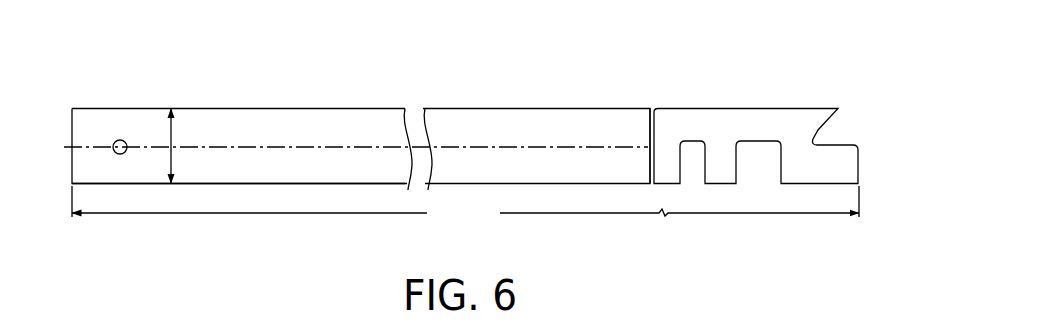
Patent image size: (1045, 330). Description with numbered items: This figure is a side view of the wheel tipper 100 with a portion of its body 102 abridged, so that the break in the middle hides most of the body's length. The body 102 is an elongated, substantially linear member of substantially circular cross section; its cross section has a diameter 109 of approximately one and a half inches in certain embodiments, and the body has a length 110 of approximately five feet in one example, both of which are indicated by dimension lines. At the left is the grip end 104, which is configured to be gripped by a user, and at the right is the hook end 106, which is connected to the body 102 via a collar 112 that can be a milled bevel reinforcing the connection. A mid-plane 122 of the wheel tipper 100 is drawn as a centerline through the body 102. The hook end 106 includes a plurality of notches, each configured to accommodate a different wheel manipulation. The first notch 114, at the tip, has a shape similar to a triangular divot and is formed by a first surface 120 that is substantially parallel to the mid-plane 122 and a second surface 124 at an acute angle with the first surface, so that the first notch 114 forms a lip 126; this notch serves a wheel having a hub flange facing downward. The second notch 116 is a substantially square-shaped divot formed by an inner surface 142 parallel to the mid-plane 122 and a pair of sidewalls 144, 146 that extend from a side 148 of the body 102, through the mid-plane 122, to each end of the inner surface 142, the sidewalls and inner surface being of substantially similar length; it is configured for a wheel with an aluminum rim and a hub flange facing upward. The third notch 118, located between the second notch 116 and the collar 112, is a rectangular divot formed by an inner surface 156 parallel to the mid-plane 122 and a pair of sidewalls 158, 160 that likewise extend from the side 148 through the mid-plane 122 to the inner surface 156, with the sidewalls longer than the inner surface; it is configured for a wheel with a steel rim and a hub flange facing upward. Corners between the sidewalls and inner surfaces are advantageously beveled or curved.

The wheel tipper 100 is at (343, 237).
The body 102 is at (490, 108).
The grip end 104 is at (125, 73).
The hook end 106 is at (708, 87).
The diameter 109 is at (171, 108).
The length 110 is at (465, 204).
The collar 112 is at (648, 105).
The first notch 114 is at (858, 128).
The second notch 116 is at (760, 195).
The third notch 118 is at (685, 195).
The first surface 120 is at (835, 144).
The mid-plane 122 is at (278, 145).
The second surface 124 is at (818, 130).
The lip 126 is at (829, 90).
The inner surface 142 is at (760, 141).
The sidewall 144 is at (781, 160).
The sidewall 146 is at (735, 166).
The side 148 is at (275, 182).
The inner surface 156 is at (685, 141).
The sidewall 158 is at (700, 152).
The sidewall 160 is at (680, 172).